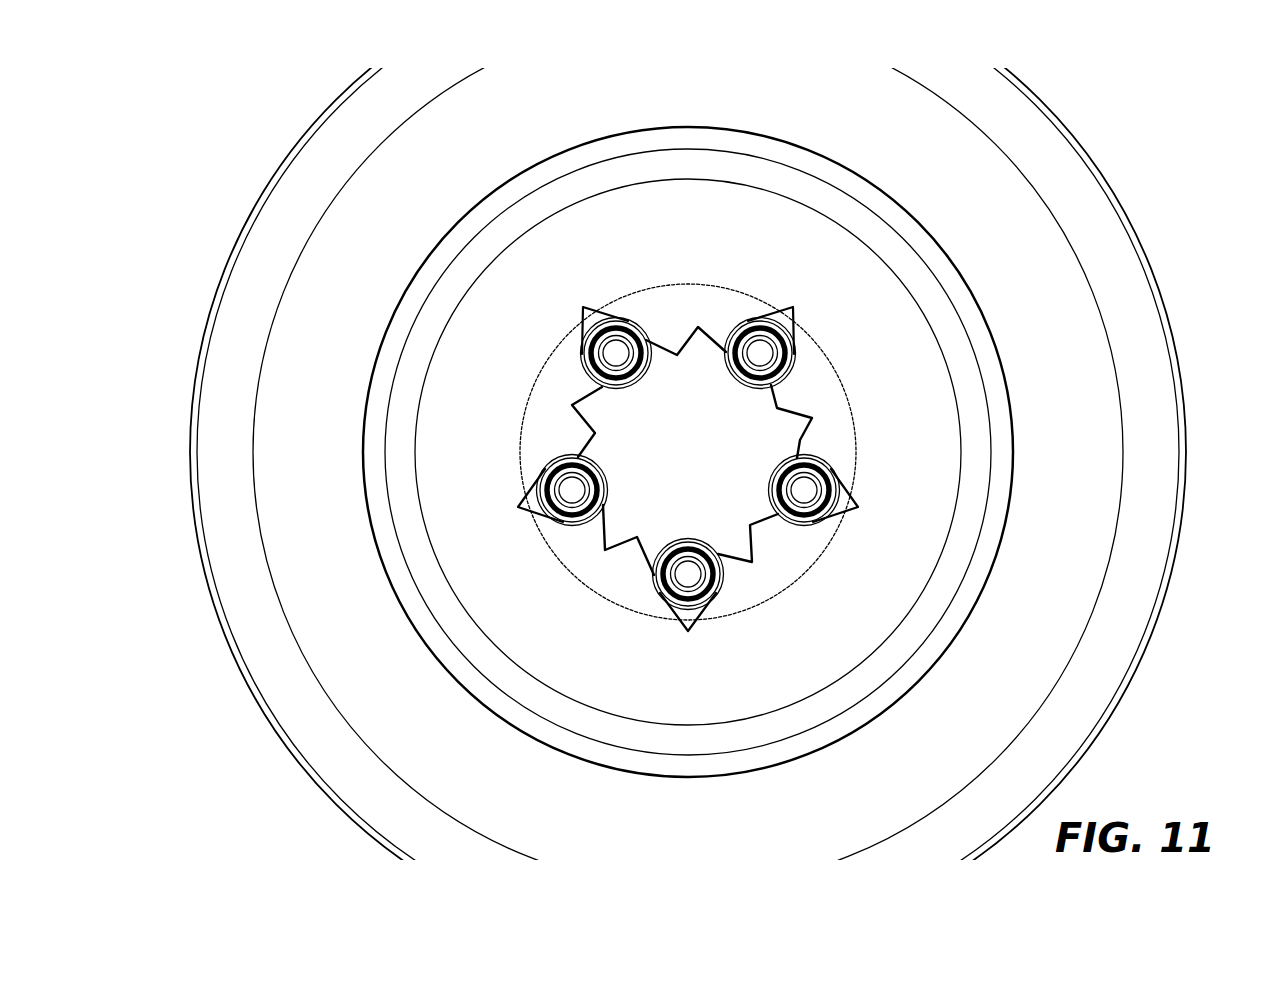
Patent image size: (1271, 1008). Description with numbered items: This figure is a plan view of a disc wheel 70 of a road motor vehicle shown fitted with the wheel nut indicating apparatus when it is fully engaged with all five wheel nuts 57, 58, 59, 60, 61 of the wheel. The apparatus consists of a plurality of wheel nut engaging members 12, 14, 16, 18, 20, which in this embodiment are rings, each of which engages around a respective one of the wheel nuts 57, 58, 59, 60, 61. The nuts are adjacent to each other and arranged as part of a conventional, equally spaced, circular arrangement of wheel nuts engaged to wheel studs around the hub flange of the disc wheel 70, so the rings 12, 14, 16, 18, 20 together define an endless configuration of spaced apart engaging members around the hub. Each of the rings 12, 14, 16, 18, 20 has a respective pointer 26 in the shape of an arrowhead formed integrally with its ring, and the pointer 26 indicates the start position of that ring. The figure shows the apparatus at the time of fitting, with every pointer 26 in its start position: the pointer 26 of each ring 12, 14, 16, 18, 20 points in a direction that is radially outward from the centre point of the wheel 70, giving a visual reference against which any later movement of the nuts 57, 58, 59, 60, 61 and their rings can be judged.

The wheel nut engaging member 12 is at (580, 320).
The wheel nut engaging member 14 is at (798, 340).
The wheel nut engaging member 16 is at (838, 485).
The wheel nut engaging member 18 is at (793, 548).
The wheel nut engaging member 20 is at (598, 512).
The pointer 26 is at (583, 307).
The wheel nut 57 is at (650, 322).
The wheel nut 58 is at (766, 304).
The wheel nut 59 is at (816, 522).
The wheel nut 60 is at (656, 580).
The wheel nut 61 is at (545, 478).
The disc wheel 70 is at (446, 493).